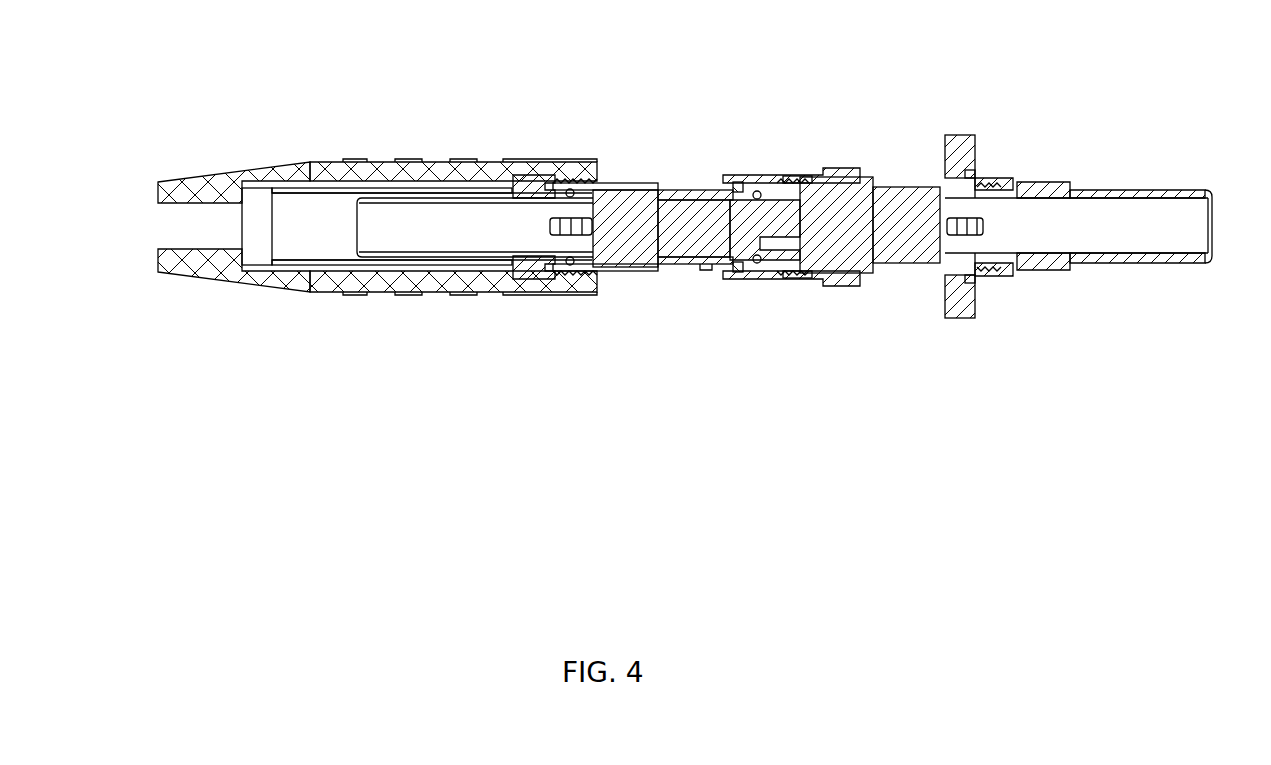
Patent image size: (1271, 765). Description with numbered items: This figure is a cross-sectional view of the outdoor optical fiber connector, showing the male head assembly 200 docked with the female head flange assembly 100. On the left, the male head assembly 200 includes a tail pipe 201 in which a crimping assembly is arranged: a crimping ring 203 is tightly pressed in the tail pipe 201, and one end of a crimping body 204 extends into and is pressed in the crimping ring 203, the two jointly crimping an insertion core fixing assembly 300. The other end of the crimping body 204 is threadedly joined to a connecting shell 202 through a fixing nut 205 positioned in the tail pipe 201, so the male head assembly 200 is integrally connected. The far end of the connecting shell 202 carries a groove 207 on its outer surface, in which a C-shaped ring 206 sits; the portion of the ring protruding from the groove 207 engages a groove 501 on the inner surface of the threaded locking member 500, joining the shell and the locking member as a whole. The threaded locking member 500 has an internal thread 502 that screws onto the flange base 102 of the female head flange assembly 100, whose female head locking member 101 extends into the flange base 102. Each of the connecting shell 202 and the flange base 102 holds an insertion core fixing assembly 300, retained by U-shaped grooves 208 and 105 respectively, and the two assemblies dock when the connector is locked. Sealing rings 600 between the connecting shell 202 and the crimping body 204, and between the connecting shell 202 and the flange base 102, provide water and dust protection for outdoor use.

The female head flange assembly 100 is at (1000, 157).
The female head locking member 101 is at (1103, 190).
The flange base 102 is at (965, 135).
The U-shaped groove 105 is at (938, 195).
The male head assembly 200 is at (456, 146).
The tail pipe 201 is at (212, 178).
The connecting shell 202 is at (686, 190).
The crimping ring 203 is at (320, 190).
The crimping body 204 is at (410, 198).
The fixing nut 205 is at (536, 178).
The C-shaped ring 206 is at (738, 182).
The groove 207 is at (706, 268).
The U-shaped groove 208 is at (630, 185).
The insertion core fixing assembly 300 is at (706, 205).
The threaded locking member 500 is at (850, 170).
The groove 501 is at (755, 191).
The internal thread 502 is at (797, 176).
The sealing ring 600 is at (577, 180).